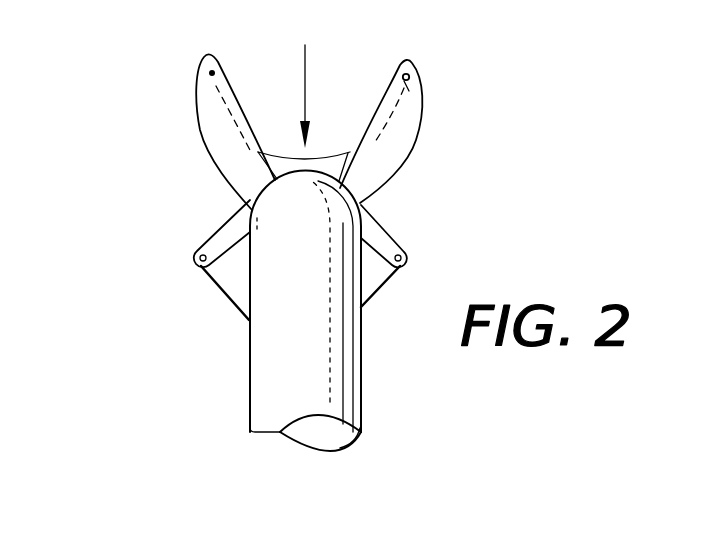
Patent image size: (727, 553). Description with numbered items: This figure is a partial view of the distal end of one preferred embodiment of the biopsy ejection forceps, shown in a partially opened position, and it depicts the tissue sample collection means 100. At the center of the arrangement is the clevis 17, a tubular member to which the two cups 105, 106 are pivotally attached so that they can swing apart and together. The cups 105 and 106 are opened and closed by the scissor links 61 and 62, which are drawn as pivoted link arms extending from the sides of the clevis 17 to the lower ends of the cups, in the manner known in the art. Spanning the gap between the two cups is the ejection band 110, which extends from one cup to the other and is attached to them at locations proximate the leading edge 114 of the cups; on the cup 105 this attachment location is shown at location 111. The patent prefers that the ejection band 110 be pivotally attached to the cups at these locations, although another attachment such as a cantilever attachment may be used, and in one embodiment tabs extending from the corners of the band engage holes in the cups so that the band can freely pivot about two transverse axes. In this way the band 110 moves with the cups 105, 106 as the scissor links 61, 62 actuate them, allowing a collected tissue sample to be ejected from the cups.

The tissue sample collection means 100 is at (112, 51).
The clevis 17 is at (270, 378).
The ejection band 110 is at (341, 152).
The cup 106 is at (216, 153).
The cup 105 is at (365, 173).
The leading edge 114 is at (412, 60).
The attachment location 111 is at (409, 89).
The scissor link 61 is at (382, 291).
The scissor link 62 is at (212, 287).